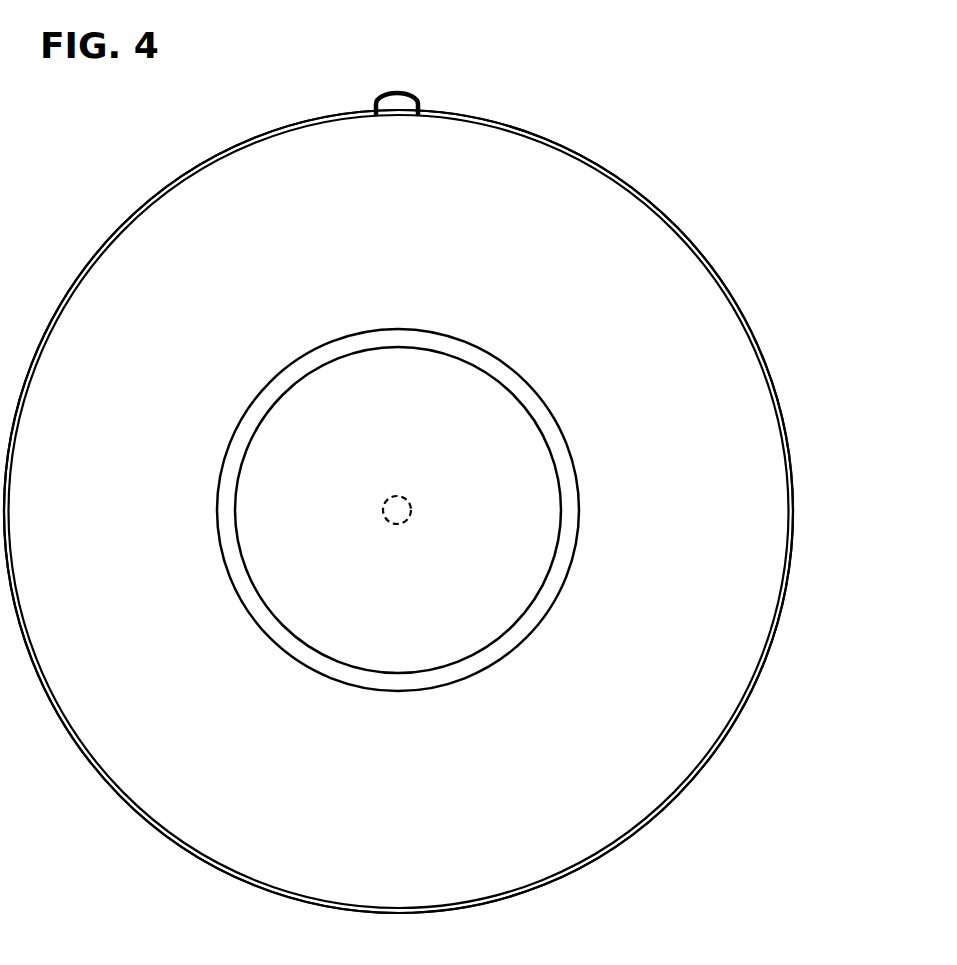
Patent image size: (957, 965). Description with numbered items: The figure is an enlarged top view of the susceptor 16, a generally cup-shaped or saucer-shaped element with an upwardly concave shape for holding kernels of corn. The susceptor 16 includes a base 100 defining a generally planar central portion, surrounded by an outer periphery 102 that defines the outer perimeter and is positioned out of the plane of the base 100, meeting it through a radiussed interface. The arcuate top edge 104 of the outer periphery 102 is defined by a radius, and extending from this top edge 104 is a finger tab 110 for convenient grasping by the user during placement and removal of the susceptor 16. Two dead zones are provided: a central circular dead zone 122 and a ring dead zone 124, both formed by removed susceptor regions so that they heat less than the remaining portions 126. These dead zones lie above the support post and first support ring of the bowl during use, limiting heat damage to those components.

The susceptor 16 is at (666, 172).
The outer periphery 102 is at (553, 140).
The top edge 104 is at (787, 448).
The finger tab 110 is at (397, 98).
The ring dead zone 124 is at (476, 675).
The central circular dead zone 122 is at (408, 521).
The base 100 is at (424, 437).
The remaining portions 126 is at (336, 585).